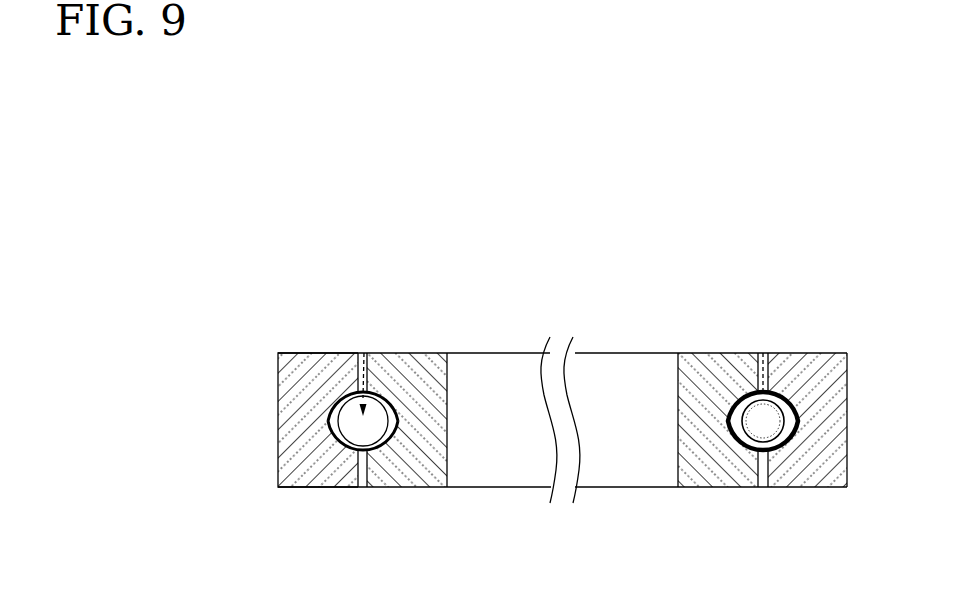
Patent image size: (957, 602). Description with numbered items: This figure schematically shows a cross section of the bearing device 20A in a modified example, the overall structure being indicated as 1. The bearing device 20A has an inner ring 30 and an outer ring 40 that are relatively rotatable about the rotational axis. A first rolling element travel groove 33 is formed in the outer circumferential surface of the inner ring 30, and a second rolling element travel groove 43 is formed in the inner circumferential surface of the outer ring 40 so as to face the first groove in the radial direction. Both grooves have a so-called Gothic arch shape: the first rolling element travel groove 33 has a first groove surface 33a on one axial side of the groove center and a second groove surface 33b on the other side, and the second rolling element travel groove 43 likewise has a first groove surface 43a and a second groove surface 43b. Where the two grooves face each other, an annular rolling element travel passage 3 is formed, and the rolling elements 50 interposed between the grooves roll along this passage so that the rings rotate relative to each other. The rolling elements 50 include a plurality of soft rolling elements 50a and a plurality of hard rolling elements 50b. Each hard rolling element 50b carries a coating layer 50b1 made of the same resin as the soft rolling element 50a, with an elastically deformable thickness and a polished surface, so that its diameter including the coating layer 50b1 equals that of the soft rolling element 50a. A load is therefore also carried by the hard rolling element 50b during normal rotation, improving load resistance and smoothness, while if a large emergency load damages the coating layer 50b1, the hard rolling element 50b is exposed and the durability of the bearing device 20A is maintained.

The motion guide device 1 is at (256, 238).
The bearing device 20A is at (305, 298).
The outer ring 40 is at (322, 353).
The inner ring 30 is at (403, 353).
The rolling element travel passage 3 is at (365, 353).
The second rolling element travel groove 43 is at (287, 416).
The first groove surface 43a is at (348, 398).
The second groove surface 43b is at (348, 438).
The first rolling element travel groove 33 is at (435, 416).
The first groove surface 33a is at (378, 398).
The second groove surface 33b is at (378, 438).
The rolling elements 50 is at (591, 487).
The soft rolling element 50a is at (363, 451).
The hard rolling element 50b is at (763, 449).
The coating layer 50b1 is at (762, 353).